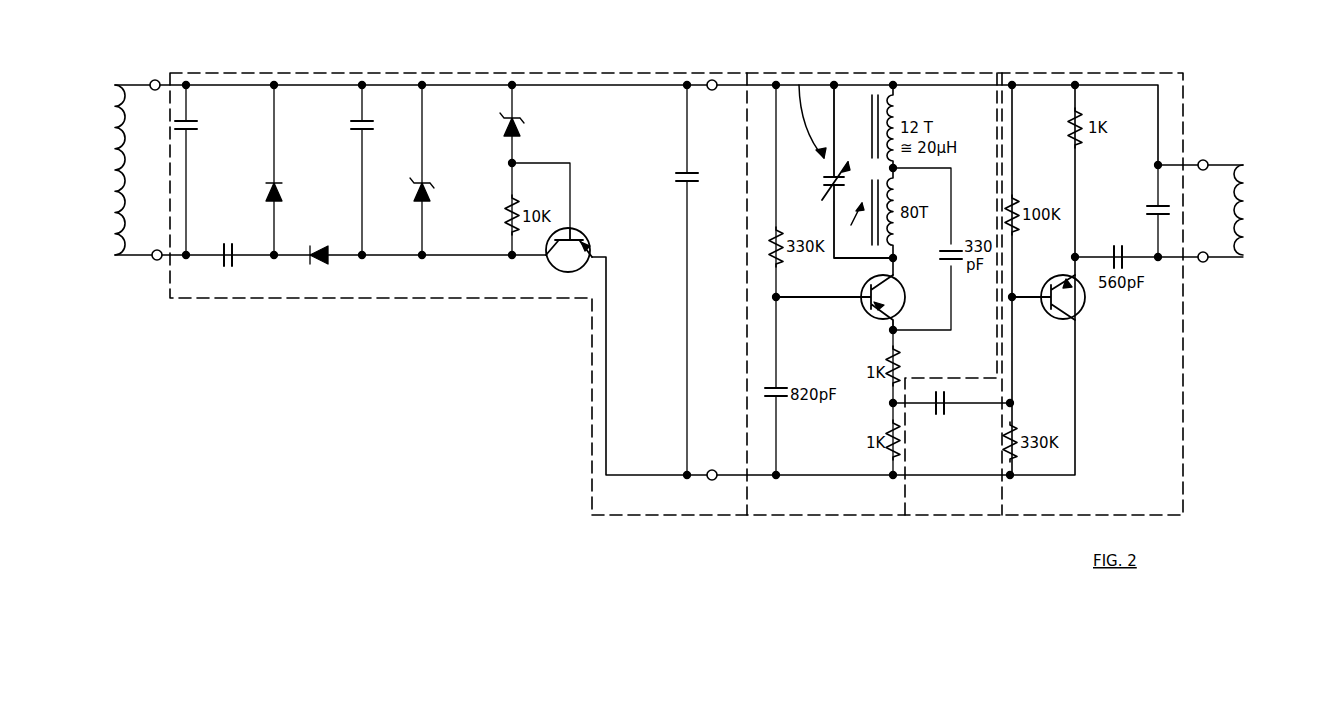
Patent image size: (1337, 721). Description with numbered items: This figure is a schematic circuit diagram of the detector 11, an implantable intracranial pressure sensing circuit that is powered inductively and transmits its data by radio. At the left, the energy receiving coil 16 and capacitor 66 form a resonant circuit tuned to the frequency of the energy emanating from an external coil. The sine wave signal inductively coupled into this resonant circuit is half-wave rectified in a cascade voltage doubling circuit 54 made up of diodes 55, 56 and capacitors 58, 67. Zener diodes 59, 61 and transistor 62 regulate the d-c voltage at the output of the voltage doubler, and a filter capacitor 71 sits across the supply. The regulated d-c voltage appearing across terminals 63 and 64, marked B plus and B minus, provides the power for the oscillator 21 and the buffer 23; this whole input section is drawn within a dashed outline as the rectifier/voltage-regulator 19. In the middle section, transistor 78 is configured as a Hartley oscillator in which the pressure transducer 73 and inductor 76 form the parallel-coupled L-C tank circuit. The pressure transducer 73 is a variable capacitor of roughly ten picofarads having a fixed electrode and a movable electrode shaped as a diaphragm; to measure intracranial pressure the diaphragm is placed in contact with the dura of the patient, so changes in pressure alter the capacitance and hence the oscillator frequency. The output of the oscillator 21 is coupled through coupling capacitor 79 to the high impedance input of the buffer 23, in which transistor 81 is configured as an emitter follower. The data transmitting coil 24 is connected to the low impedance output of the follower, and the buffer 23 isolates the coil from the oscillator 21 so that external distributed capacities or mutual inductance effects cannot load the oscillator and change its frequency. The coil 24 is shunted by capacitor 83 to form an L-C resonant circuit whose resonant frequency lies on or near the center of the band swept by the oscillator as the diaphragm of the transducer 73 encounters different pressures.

The oscillator circuit 11 is at (505, 363).
The energy receiving coil 16 is at (115, 85).
The rectifier/voltage-regulator 19 is at (364, 73).
The oscillator 21 is at (928, 73).
The buffer 23 is at (1073, 73).
The data transmitting coil 24 is at (1252, 190).
The cascade voltage doubling circuit 54 is at (285, 238).
The diode 55 is at (276, 183).
The diode 56 is at (325, 250).
The capacitor 58 is at (366, 132).
The zener diode 59 is at (430, 205).
The zener diode 61 is at (506, 130).
The transistor 62 is at (590, 236).
The terminal 63 is at (718, 86).
The terminal 64 is at (712, 473).
The capacitor 66 is at (197, 132).
The capacitor 67 is at (226, 250).
The capacitor 71 is at (685, 183).
The pressure transducer 73 is at (830, 178).
The inductor 76 is at (852, 228).
The transistor 78 is at (903, 302).
The coupling capacitor 79 is at (946, 410).
The transistor 81 is at (1047, 313).
The capacitor 83 is at (1153, 202).